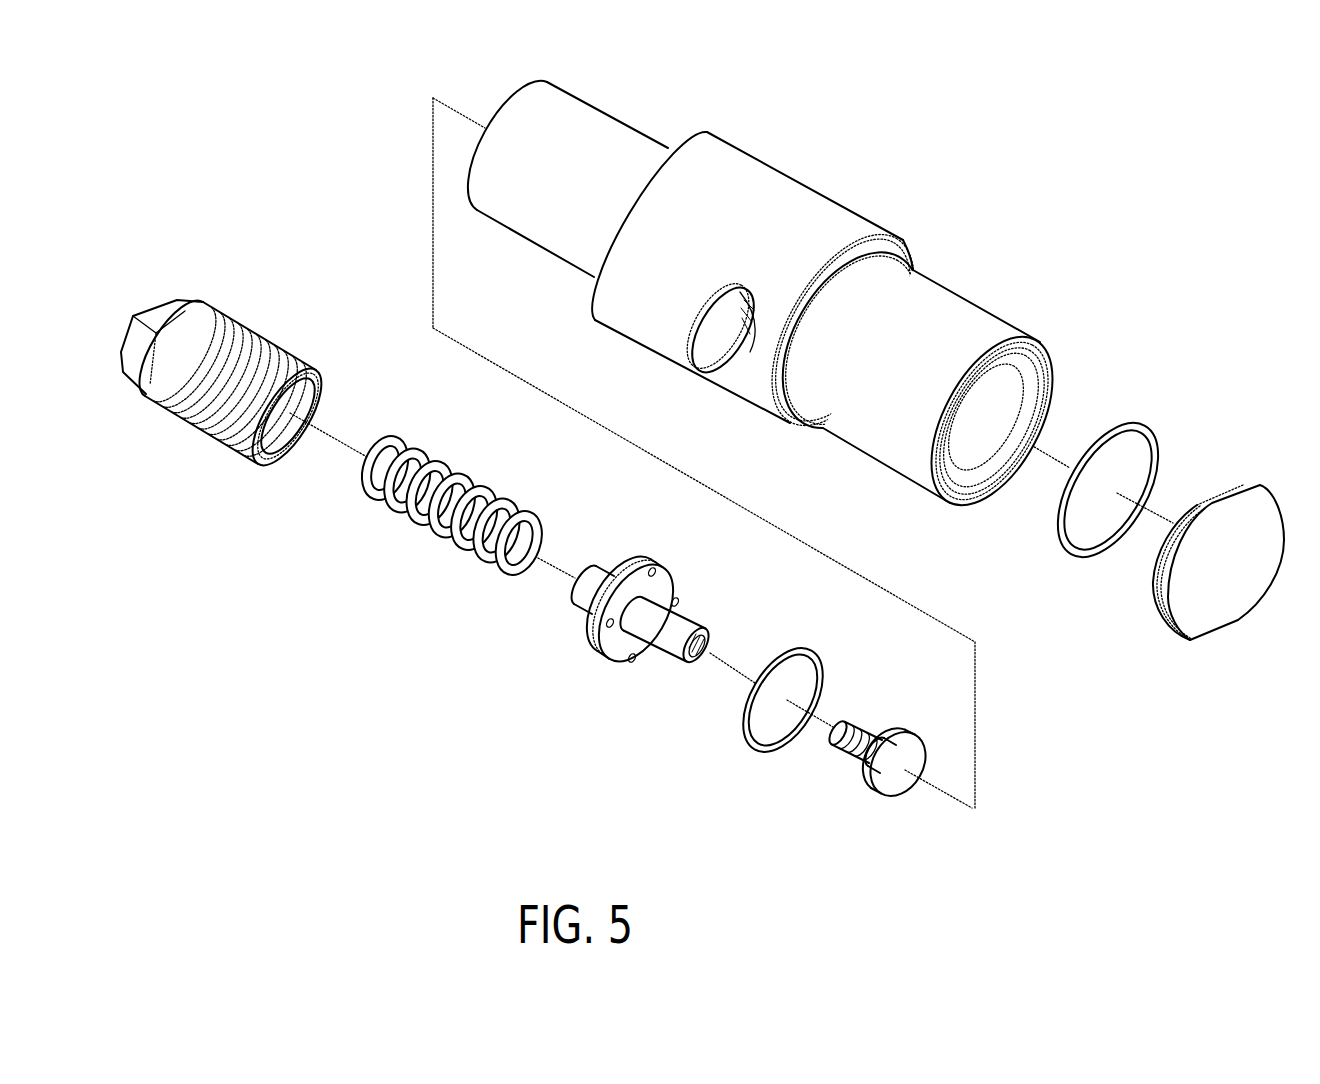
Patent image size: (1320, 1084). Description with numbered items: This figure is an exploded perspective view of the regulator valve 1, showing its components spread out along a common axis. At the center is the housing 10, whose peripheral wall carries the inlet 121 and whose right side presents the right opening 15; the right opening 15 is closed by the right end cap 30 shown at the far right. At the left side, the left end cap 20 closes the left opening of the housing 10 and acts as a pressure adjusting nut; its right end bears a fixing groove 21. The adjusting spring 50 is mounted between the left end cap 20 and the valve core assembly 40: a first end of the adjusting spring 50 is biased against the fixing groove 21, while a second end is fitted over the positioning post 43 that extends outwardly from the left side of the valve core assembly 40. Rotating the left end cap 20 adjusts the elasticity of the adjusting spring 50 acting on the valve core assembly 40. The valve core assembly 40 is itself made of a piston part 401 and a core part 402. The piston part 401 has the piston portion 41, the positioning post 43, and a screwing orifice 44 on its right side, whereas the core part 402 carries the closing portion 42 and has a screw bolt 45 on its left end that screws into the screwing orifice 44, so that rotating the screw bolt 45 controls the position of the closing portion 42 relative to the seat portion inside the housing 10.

The regulator valve 1 is at (300, 207).
The housing 10 is at (794, 303).
The inlet 121 is at (717, 330).
The right opening 15 is at (997, 398).
The left end cap 20 is at (227, 423).
The fixing groove 21 is at (285, 433).
The adjusting spring 50 is at (447, 543).
The valve core assembly 40 is at (718, 693).
The piston portion 41 is at (660, 557).
The positioning post 43 is at (580, 603).
The screwing orifice 44 is at (712, 652).
The piston part 401 is at (613, 667).
The core part 402 is at (857, 770).
The screw bolt 45 is at (858, 717).
The closing portion 42 is at (882, 800).
The right end cap 30 is at (1260, 485).